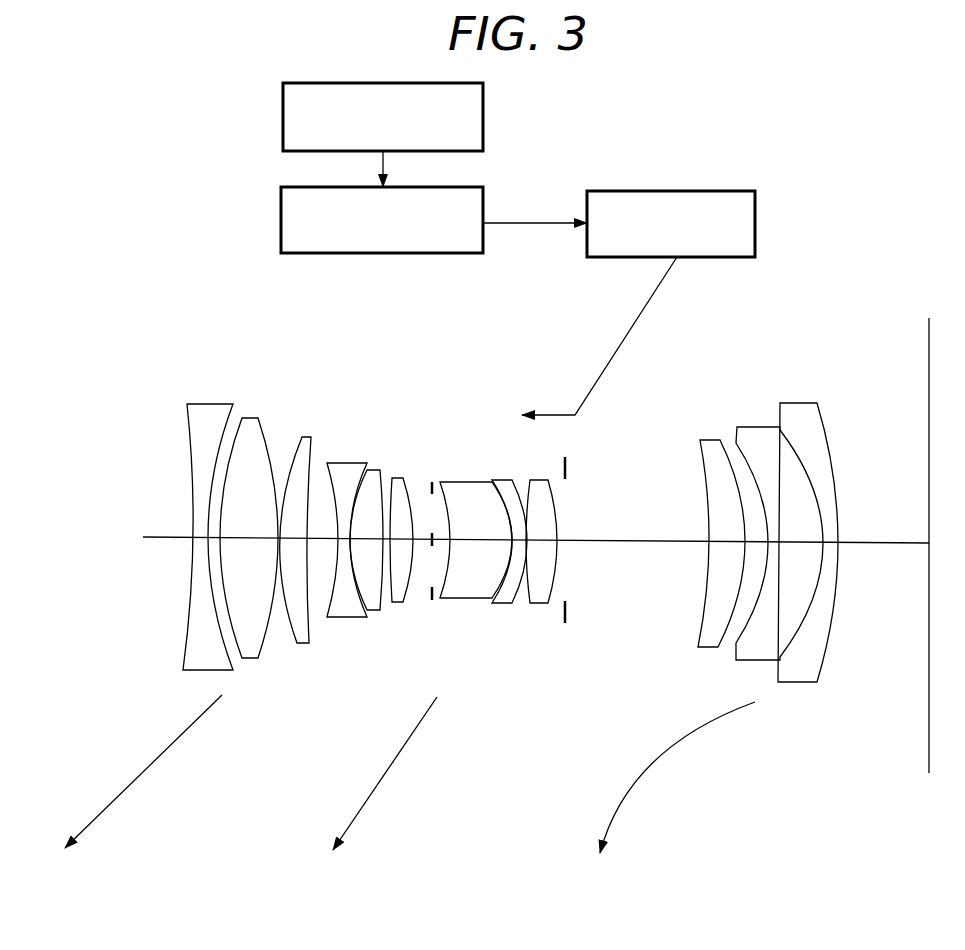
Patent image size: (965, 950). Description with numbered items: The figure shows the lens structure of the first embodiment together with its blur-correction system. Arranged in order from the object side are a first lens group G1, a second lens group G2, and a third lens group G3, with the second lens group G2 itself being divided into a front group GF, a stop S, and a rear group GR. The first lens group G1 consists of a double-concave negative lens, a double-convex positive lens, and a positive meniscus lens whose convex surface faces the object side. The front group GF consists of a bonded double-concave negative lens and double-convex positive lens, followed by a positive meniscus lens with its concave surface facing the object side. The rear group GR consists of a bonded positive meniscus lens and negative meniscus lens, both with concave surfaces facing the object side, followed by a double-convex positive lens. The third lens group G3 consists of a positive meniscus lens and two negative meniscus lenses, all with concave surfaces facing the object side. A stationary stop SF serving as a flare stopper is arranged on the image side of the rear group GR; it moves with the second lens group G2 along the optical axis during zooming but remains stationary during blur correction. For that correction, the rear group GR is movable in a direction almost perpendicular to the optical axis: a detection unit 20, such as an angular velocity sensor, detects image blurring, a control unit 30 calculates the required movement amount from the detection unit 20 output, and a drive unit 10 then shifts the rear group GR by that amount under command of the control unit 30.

The drive unit 10 is at (757, 198).
The detection unit 20 is at (484, 93).
The control unit 30 is at (486, 197).
The first lens group G1 is at (318, 388).
The second lens group G2 is at (469, 459).
The third lens group G3 is at (837, 395).
The front group of the second lens group GF is at (407, 452).
The rear group of the second lens group GR is at (553, 450).
The stop S is at (432, 482).
The stationary stop SF is at (568, 465).